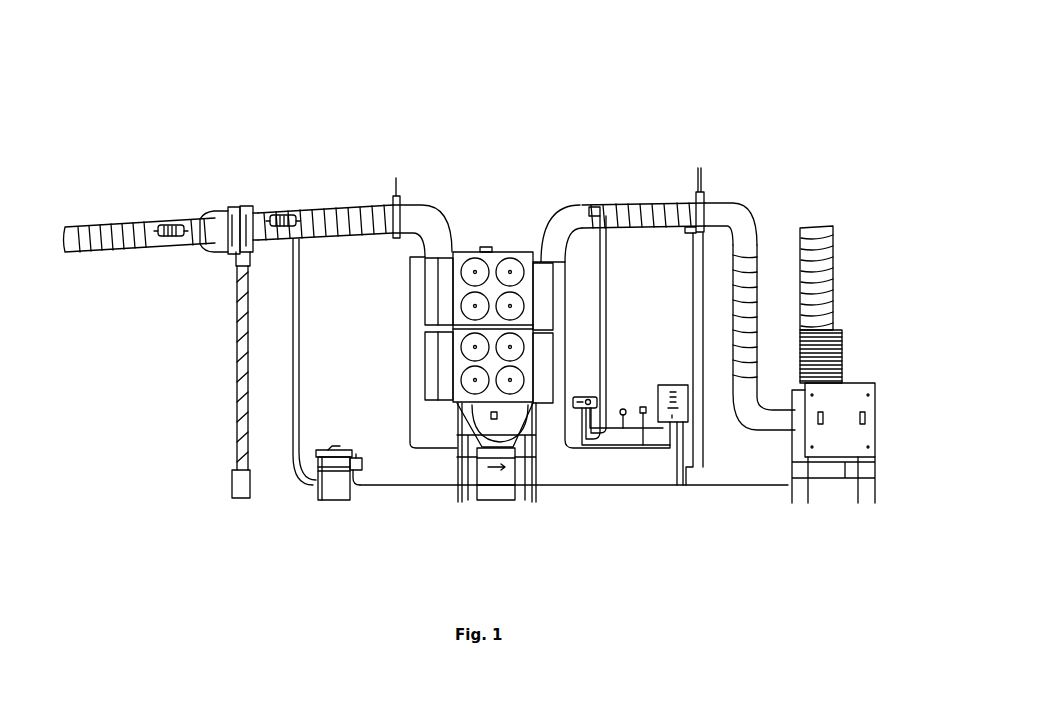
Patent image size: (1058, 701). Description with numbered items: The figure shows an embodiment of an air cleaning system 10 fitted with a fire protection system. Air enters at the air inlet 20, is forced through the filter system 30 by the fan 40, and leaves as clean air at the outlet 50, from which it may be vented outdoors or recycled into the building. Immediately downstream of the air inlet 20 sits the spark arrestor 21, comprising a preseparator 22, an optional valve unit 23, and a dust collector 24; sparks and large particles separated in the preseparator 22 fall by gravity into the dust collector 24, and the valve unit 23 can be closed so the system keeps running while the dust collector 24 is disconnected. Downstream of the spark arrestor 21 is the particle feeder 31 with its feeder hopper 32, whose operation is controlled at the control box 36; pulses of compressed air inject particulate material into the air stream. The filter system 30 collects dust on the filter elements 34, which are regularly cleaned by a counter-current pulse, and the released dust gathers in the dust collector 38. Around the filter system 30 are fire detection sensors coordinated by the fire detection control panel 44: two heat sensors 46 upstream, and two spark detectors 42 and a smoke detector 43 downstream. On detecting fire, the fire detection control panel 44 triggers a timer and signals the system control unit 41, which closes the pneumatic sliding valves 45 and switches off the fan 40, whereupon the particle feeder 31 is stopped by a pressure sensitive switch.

The air cleaning system 10 is at (366, 76).
The air inlet 20 is at (138, 245).
The spark arrestor 21 is at (262, 193).
The preseparator 22 is at (226, 246).
The valve unit 23 is at (238, 462).
The dust collector 24 is at (235, 490).
The filter system 30 is at (500, 222).
The particle feeder 31 is at (385, 503).
The feeder hopper 32 is at (325, 450).
The filter elements 34 is at (512, 266).
The control box 36 is at (358, 472).
The dust collector 38 is at (508, 497).
The fan 40 is at (870, 395).
The system control unit 41 is at (672, 385).
The spark detectors 42 is at (592, 207).
The smoke detector 43 is at (665, 205).
The fire detection control panel 44 is at (584, 397).
The pneumatic sliding valves 45 is at (399, 190).
The heat sensors 46 is at (484, 247).
The outlet 50 is at (818, 224).